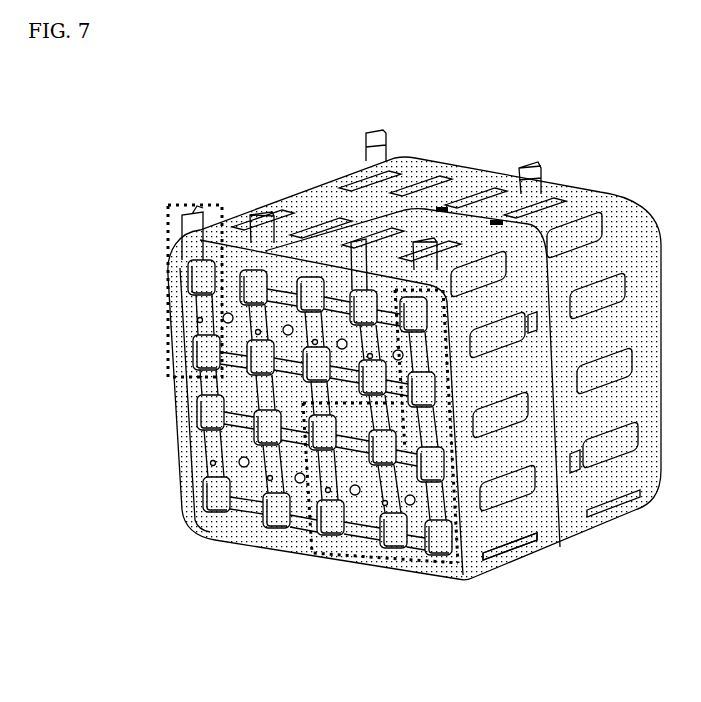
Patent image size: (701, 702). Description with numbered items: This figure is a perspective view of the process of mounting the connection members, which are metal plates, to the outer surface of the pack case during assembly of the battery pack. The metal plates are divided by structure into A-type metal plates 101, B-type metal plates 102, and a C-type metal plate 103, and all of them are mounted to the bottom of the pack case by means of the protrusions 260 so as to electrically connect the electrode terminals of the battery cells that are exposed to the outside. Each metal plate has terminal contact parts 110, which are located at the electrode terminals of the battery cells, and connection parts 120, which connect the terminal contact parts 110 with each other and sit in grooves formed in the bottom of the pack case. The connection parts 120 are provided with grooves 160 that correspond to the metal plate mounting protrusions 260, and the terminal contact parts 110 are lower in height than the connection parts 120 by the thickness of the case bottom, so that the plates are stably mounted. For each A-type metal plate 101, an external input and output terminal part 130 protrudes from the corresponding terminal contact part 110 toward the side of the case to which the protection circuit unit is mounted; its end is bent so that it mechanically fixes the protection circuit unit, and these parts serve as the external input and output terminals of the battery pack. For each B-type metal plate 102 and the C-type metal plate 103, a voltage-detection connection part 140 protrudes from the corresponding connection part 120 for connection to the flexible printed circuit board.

The A-type metal plate 101 is at (176, 326).
The B-type metal plate 102 is at (381, 558).
The C-type metal plate 103 is at (466, 566).
The terminal contact part 110 is at (200, 349).
The connection part 120 is at (188, 297).
The external input and output terminal part 130 is at (193, 212).
The voltage-detection connection part 140 is at (197, 400).
The groove 160 is at (232, 496).
The protrusion 260 is at (211, 464).